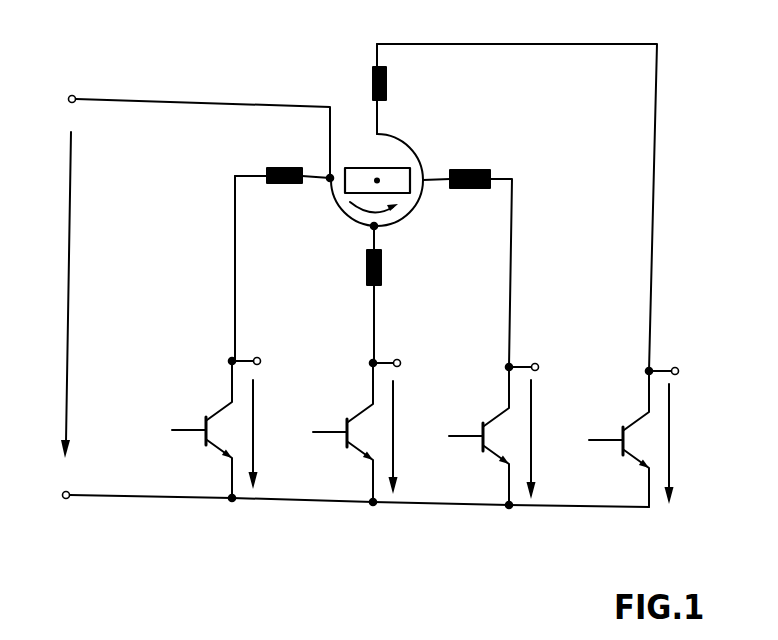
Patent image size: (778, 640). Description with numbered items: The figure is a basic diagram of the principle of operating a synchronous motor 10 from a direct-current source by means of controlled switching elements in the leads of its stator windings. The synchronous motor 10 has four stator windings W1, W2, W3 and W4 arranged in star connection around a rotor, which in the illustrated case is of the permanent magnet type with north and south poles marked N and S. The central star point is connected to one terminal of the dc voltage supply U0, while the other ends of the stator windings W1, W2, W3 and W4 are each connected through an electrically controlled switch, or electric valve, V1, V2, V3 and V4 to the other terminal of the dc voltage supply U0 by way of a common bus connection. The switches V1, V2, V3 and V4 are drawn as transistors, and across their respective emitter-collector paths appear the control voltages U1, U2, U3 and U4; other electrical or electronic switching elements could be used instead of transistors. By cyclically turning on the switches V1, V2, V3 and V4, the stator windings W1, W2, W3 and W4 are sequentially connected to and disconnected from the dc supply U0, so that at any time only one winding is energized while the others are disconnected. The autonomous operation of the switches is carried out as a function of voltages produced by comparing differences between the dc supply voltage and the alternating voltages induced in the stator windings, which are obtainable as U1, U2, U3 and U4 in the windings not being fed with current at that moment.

The synchronous motor 10 is at (446, 134).
The stator winding W1 is at (284, 183).
The stator winding W2 is at (381, 266).
The stator winding W3 is at (470, 188).
The stator winding W4 is at (386, 84).
The electrically controlled switch V1 is at (221, 442).
The electrically controlled switch V2 is at (362, 444).
The electrically controlled switch V3 is at (498, 446).
The electrically controlled switch V4 is at (637, 450).
The dc voltage supply U0 is at (83, 295).
The control voltage U1 is at (261, 417).
The control voltage U2 is at (402, 420).
The control voltage U3 is at (540, 424).
The control voltage U4 is at (679, 429).